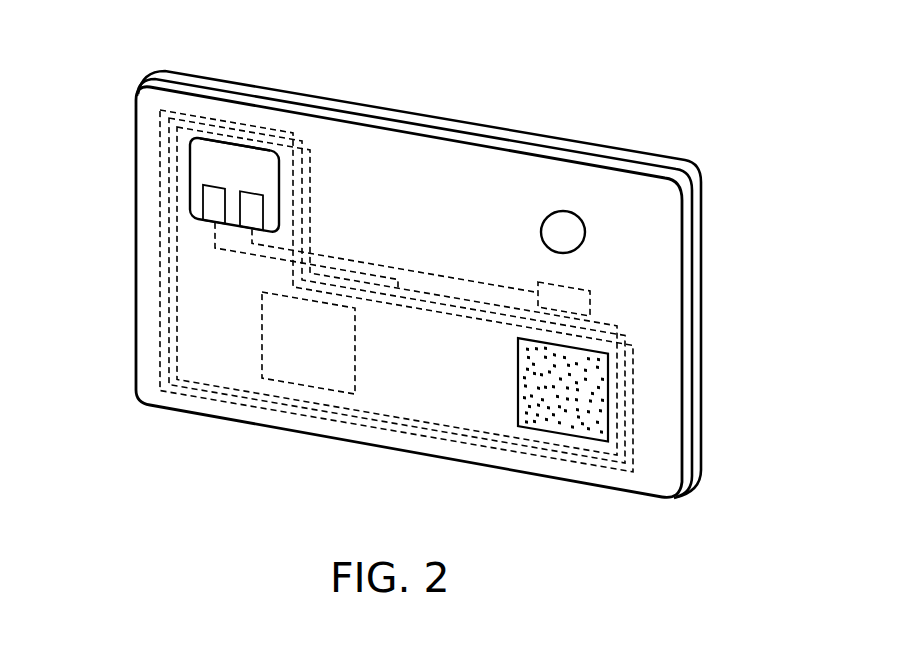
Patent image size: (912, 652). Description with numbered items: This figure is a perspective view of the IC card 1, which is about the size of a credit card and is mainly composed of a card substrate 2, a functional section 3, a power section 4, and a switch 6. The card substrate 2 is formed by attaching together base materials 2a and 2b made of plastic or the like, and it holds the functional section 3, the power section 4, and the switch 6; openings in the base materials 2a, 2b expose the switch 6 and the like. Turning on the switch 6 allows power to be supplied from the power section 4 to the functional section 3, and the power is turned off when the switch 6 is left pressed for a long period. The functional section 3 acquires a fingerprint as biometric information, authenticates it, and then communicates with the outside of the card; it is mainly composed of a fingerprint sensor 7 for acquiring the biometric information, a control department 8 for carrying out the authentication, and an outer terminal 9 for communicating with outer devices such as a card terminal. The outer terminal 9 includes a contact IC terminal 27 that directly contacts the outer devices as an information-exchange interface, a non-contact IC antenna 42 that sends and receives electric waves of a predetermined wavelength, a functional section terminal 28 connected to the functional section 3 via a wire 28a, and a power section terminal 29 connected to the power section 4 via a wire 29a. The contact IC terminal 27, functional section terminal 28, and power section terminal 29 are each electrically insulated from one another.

The IC card 1 is at (683, 105).
The card substrate 2 is at (786, 195).
The base material 2a is at (688, 246).
The base material 2b is at (693, 208).
The functional section 3 is at (407, 436).
The power section 4 is at (590, 299).
The switch 6 is at (563, 220).
The fingerprint sensor 7 is at (560, 420).
The control department 8 is at (304, 374).
The outer terminal 9 is at (233, 139).
The contact IC terminal 27 is at (263, 157).
The functional section terminal 28 is at (212, 203).
The wire 28a is at (215, 248).
The power section terminal 29 is at (253, 202).
The wire 29a is at (452, 276).
The non-contact IC antenna 42 is at (623, 377).